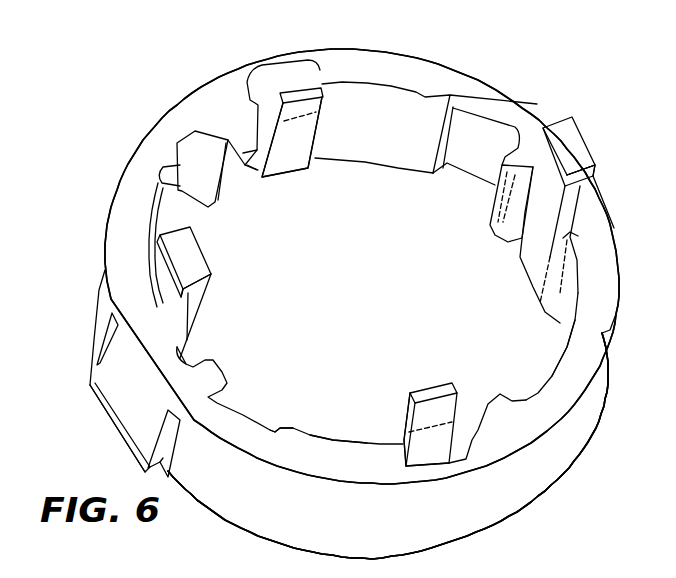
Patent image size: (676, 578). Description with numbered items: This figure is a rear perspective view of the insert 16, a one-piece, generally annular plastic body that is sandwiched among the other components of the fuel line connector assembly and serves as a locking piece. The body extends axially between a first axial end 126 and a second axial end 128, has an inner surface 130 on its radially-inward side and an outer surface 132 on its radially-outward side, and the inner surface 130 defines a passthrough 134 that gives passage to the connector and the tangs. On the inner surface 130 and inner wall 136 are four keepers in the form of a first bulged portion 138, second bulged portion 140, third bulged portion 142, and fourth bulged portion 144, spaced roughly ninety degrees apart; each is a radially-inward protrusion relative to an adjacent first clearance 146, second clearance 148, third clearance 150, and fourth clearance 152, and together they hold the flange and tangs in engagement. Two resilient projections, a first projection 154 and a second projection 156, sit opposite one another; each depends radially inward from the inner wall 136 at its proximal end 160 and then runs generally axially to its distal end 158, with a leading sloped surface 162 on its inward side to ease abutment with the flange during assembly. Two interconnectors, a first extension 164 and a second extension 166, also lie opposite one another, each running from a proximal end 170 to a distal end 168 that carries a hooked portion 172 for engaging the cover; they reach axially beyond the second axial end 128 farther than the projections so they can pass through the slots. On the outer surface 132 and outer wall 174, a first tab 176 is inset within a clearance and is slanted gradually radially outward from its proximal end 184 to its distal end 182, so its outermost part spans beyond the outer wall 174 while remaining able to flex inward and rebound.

The insert 16 is at (439, 55).
The first axial end 126 is at (243, 530).
The second axial end 128 is at (470, 78).
The inner surface 130 is at (346, 103).
The outer surface 132 is at (473, 510).
The passthrough 134 is at (363, 274).
The inner wall 136 is at (362, 266).
The first bulged portion 138 is at (370, 142).
The second bulged portion 140 is at (153, 220).
The third bulged portion 142 is at (327, 438).
The fourth bulged portion 144 is at (572, 293).
The first clearance 146 is at (475, 143).
The second clearance 148 is at (178, 172).
The third clearance 150 is at (243, 415).
The fourth clearance 152 is at (548, 388).
The first projection 154 is at (322, 113).
The second projection 156 is at (405, 412).
The distal end 158 is at (296, 94).
The proximal end 160 is at (264, 180).
The leading sloped surface 162 is at (293, 155).
The first extension 164 is at (207, 301).
The second extension 166 is at (558, 202).
The distal end 168 is at (570, 135).
The proximal end 170 is at (527, 283).
The hooked portion 172 is at (592, 168).
The outer wall 174 is at (388, 446).
The first tab 176 is at (95, 375).
The distal end 182 is at (102, 420).
The proximal end 184 is at (138, 355).